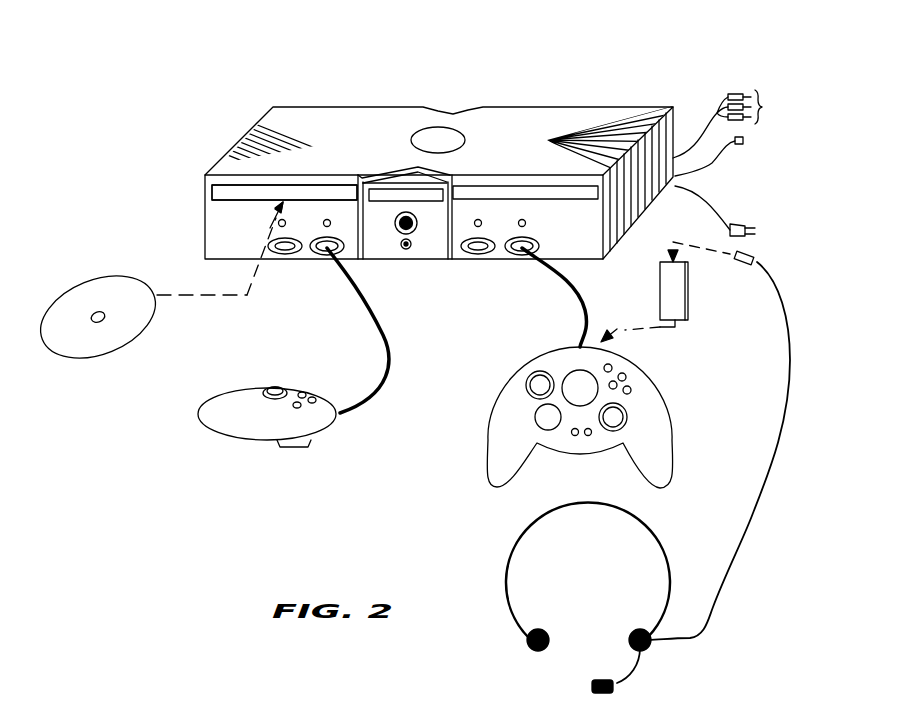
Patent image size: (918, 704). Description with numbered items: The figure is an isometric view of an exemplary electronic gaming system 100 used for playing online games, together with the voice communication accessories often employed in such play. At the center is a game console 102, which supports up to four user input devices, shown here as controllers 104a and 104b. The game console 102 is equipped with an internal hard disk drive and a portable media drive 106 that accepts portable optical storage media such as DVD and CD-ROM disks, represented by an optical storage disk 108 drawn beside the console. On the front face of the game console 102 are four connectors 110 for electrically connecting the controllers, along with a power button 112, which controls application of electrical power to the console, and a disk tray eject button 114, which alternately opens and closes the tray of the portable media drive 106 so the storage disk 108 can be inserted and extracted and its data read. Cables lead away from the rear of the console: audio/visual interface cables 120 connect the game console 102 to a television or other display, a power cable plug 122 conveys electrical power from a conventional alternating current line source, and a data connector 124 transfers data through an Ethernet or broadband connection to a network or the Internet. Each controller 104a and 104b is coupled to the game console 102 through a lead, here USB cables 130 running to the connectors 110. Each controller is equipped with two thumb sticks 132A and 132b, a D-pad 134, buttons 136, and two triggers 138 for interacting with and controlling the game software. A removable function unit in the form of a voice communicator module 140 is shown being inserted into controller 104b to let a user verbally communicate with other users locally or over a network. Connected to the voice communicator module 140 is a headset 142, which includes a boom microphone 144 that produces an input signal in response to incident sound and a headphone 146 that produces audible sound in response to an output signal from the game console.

The electronic gaming system 100 is at (576, 31).
The game console 102 is at (308, 107).
The controller 104a is at (268, 442).
The controller 104b is at (503, 482).
The portable media drive 106 is at (218, 192).
The optical storage disk 108 is at (108, 350).
The connectors 110 is at (326, 248).
The power button 112 is at (407, 250).
The disk tray eject button 114 is at (406, 212).
The audio/visual interface cables 120 is at (728, 94).
The power cable plug 122 is at (743, 223).
The data connector 124 is at (712, 163).
The USB cables 130 is at (383, 335).
The thumb stick 132A is at (527, 383).
The thumb stick 132b is at (273, 387).
The D-pad 134 is at (535, 417).
The buttons 136 is at (626, 377).
The triggers 138 is at (310, 440).
The voice communicator module 140 is at (688, 313).
The headset 142 is at (500, 607).
The boom microphone 144 is at (590, 690).
The headphone 146 is at (633, 635).